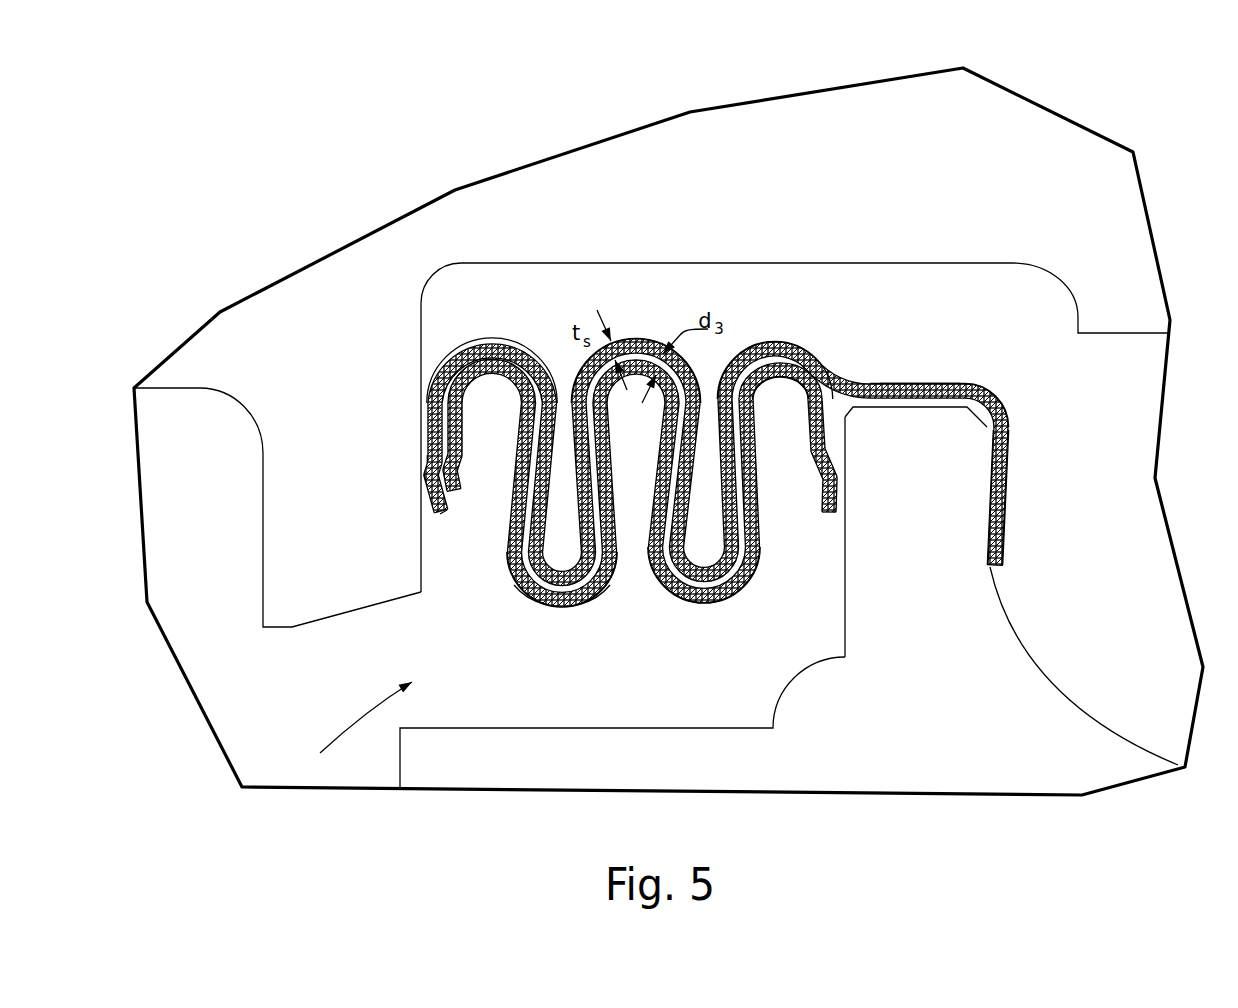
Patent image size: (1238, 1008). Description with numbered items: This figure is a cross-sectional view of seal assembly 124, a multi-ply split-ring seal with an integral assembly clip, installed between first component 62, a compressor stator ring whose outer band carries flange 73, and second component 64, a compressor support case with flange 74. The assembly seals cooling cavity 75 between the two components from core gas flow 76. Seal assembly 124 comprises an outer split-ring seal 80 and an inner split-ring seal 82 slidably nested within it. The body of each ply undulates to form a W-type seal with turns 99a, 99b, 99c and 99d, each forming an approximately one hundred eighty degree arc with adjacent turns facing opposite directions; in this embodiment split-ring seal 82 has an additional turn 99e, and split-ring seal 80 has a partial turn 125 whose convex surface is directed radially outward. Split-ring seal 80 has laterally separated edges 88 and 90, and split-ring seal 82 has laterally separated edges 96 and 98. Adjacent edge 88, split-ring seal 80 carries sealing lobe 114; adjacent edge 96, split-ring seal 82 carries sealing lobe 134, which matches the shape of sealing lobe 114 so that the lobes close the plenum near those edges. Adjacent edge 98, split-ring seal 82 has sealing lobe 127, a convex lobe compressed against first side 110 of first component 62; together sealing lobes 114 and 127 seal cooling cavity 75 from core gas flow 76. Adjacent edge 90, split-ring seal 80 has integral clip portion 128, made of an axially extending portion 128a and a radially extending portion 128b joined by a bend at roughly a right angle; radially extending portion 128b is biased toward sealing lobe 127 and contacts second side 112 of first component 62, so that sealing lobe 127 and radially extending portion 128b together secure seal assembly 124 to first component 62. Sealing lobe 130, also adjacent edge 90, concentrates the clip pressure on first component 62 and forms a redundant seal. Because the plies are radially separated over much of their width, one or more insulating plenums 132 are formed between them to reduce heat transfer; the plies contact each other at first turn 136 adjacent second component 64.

The seal assembly 124 is at (913, 235).
The second component 64 is at (300, 331).
The flange 74 is at (317, 513).
The cooling cavity 75 is at (880, 320).
The first component 62 is at (915, 708).
The first side 110 is at (843, 556).
The split-ring seal 80 is at (534, 348).
The edge 96 is at (455, 517).
The first turn 136 is at (449, 495).
The edge 98 is at (827, 521).
The edge 90 is at (997, 568).
The integral clip portion 128 is at (940, 367).
The axially extending portion 128a is at (905, 382).
The radially extending portion 128b is at (1004, 500).
The sealing lobe 130 is at (983, 537).
The flange 73 is at (950, 443).
The second side 112 is at (987, 472).
The sealing lobe 127 is at (850, 487).
The turn 99a is at (492, 337).
The turn 99b is at (563, 612).
The turn 99c is at (628, 338).
The turn 99d is at (710, 603).
The additional turn 99e is at (790, 367).
The partial turn 125 is at (775, 335).
The split-ring seal 82 is at (534, 598).
The insulating plenum 132 is at (600, 580).
The sealing lobe 134 is at (433, 470).
The sealing lobe 114 is at (421, 481).
The edge 88 is at (450, 513).
The core gas flow 76 is at (353, 717).